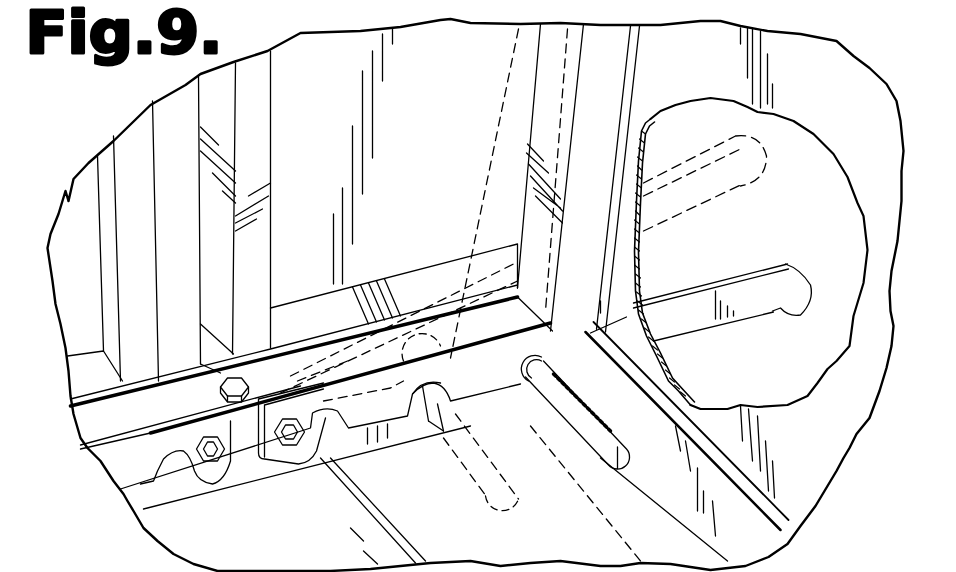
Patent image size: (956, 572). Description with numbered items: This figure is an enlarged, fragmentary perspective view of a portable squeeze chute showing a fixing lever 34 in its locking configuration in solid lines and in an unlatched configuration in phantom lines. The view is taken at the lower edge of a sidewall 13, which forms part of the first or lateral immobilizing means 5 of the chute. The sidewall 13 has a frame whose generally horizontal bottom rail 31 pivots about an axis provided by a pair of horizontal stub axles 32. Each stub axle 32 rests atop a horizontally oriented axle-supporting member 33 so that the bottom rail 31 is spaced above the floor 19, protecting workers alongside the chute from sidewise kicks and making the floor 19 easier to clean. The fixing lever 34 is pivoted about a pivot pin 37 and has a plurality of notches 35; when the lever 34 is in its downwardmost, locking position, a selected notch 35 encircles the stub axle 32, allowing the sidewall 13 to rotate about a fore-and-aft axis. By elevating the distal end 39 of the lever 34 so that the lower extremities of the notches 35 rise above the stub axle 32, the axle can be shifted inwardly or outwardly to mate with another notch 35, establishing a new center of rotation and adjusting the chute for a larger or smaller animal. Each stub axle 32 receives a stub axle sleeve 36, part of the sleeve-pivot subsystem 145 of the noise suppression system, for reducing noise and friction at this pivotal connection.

The first or lateral immobilizing means 5 is at (420, 407).
The sidewall 13 is at (808, 431).
The floor 19 is at (452, 543).
The bottom rail 31 is at (700, 520).
The stub axle 32 is at (615, 457).
The axle-supporting member 33 is at (417, 427).
The fixing lever 34 is at (125, 453).
The notch 35 is at (320, 455).
The stub axle sleeve 36 is at (575, 335).
The pivot pin 37 is at (270, 475).
The distal end 39 is at (802, 288).
The sleeve-pivot subsystem 145 is at (524, 390).